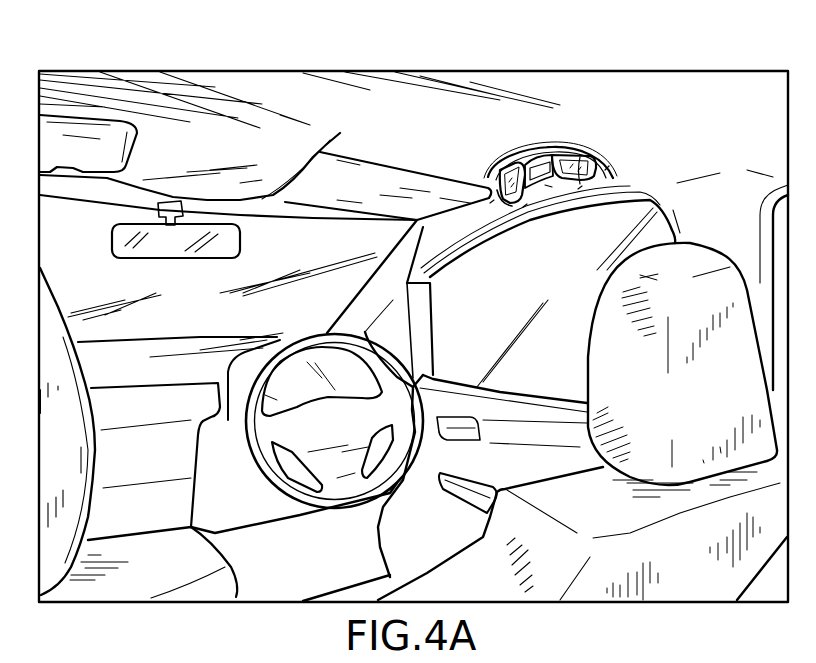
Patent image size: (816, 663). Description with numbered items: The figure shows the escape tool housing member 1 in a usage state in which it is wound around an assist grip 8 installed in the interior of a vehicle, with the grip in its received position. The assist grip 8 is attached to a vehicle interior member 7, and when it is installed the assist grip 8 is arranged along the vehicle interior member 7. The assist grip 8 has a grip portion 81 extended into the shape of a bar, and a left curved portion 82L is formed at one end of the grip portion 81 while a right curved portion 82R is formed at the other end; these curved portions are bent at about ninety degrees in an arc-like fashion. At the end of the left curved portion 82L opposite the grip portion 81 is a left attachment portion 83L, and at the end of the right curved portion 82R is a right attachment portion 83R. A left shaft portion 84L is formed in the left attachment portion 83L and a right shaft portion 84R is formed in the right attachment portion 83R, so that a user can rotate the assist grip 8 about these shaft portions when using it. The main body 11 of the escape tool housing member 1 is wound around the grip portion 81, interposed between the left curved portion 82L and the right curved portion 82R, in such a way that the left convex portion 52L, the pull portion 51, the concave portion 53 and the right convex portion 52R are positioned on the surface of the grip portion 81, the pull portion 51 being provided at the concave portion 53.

The escape tool housing member 1 is at (538, 155).
The main body 11 is at (518, 160).
The vehicle interior member 7 is at (556, 200).
The assist grip 8 is at (560, 150).
The pull portion 51 is at (548, 187).
The left convex portion 52L is at (497, 167).
The right convex portion 52R is at (532, 157).
The concave portion 53 is at (513, 167).
The grip portion 81 is at (520, 157).
The left curved portion 82L is at (497, 193).
The right curved portion 82R is at (580, 157).
The left attachment portion 83L is at (490, 203).
The right attachment portion 83R is at (608, 168).
The left shaft portion 84L is at (523, 207).
The right shaft portion 84R is at (578, 189).